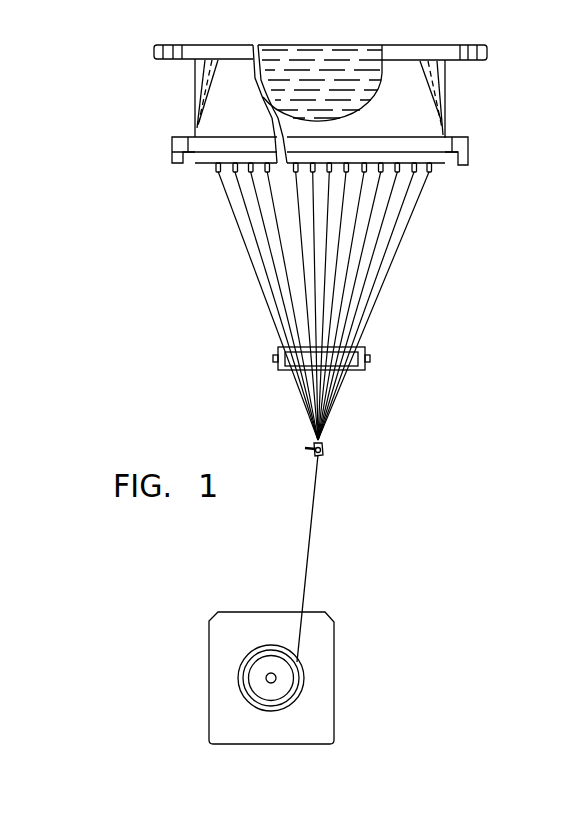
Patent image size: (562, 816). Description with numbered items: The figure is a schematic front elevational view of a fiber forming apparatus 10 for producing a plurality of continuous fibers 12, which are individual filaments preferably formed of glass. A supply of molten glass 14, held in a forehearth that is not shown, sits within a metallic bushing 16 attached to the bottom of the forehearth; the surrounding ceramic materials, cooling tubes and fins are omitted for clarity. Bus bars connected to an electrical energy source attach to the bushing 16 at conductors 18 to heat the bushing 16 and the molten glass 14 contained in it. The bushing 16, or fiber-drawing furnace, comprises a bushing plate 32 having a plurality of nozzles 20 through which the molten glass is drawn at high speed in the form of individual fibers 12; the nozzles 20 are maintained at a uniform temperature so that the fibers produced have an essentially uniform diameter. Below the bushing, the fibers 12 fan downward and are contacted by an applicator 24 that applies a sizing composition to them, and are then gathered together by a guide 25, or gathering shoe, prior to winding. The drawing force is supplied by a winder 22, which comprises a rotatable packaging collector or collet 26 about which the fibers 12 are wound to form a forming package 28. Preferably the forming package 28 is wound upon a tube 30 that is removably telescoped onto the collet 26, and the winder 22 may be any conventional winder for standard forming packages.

The fiber forming apparatus 10 is at (307, 403).
The continuous fibers 12 is at (347, 300).
The molten glass 14 is at (287, 78).
The bushing 16 is at (446, 112).
The conductors 18 is at (468, 163).
The nozzles 20 is at (218, 170).
The winder 22 is at (323, 695).
The applicator 24 is at (277, 363).
The guide 25 is at (322, 452).
The collet 26 is at (264, 665).
The forming package 28 is at (319, 623).
The tube 30 is at (275, 707).
The bushing plate 32 is at (437, 168).